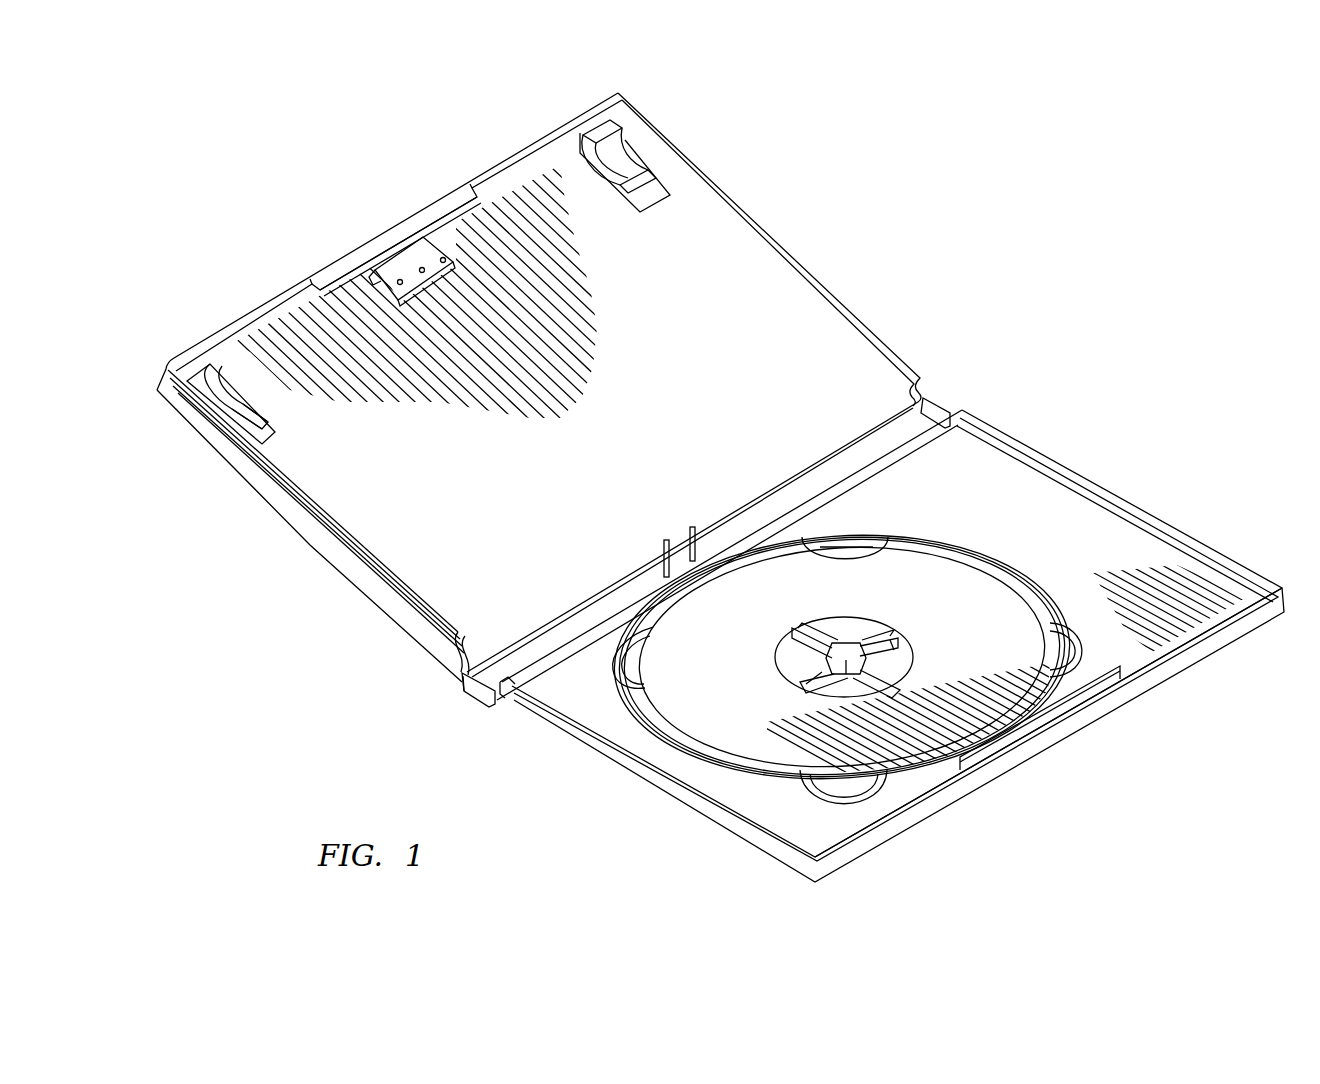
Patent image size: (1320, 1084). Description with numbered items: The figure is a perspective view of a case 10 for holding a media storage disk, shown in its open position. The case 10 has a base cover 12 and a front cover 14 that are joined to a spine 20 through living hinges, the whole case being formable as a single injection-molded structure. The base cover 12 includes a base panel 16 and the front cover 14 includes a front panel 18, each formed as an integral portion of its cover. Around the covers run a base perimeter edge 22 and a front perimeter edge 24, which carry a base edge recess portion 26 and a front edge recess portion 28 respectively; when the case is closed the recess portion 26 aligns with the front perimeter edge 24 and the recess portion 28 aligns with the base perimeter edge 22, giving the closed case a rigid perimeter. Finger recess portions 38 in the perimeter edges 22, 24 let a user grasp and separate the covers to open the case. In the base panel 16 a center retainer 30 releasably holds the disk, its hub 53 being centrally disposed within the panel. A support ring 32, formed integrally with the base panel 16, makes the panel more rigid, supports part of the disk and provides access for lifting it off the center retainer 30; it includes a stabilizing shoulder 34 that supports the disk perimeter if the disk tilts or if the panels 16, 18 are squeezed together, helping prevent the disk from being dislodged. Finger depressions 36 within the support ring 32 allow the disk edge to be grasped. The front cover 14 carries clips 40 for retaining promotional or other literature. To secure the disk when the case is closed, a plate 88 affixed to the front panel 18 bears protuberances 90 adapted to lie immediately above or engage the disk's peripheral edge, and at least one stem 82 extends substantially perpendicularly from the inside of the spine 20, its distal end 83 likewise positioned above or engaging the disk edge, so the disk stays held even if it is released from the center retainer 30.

The case 10 is at (352, 654).
The base cover 12 is at (682, 812).
The front cover 14 is at (306, 544).
The base panel 16 is at (969, 500).
The front panel 18 is at (659, 423).
The spine 20 is at (470, 690).
The base perimeter edge 22 is at (980, 412).
The front perimeter edge 24 is at (784, 238).
The base edge recess portion 26 is at (1230, 567).
The front edge recess portion 28 is at (270, 471).
The center retainer 30 is at (890, 615).
The support ring 32 is at (1075, 595).
The stabilizing shoulder 34 is at (993, 578).
The finger depressions 36 is at (845, 548).
The finger recess portions 38 is at (392, 234).
The clips 40 is at (225, 400).
The hub 53 is at (832, 617).
The stem 82 is at (702, 526).
The distal end 83 is at (693, 527).
The plate 88 is at (414, 256).
The protuberances 90 is at (380, 271).